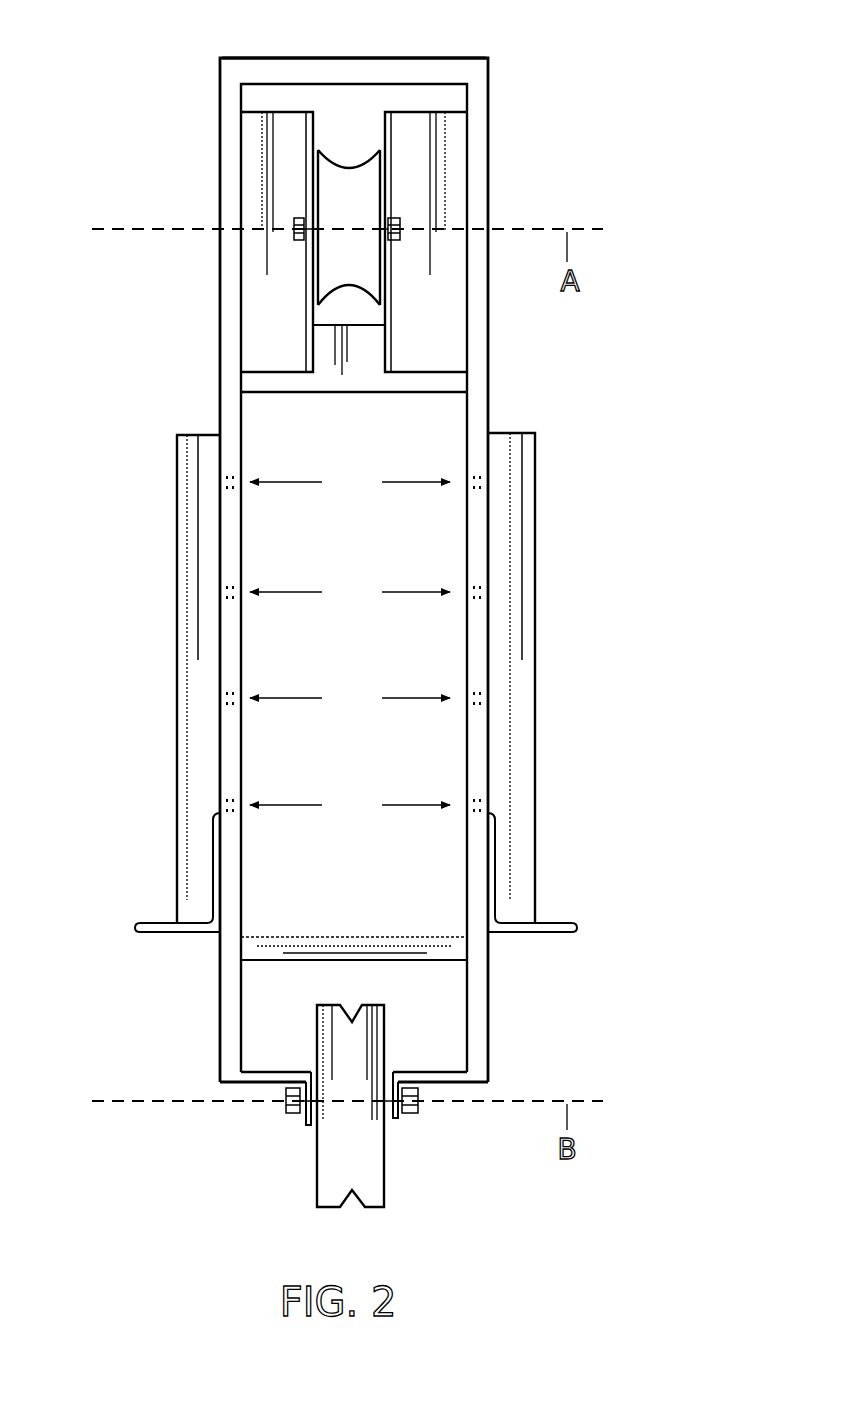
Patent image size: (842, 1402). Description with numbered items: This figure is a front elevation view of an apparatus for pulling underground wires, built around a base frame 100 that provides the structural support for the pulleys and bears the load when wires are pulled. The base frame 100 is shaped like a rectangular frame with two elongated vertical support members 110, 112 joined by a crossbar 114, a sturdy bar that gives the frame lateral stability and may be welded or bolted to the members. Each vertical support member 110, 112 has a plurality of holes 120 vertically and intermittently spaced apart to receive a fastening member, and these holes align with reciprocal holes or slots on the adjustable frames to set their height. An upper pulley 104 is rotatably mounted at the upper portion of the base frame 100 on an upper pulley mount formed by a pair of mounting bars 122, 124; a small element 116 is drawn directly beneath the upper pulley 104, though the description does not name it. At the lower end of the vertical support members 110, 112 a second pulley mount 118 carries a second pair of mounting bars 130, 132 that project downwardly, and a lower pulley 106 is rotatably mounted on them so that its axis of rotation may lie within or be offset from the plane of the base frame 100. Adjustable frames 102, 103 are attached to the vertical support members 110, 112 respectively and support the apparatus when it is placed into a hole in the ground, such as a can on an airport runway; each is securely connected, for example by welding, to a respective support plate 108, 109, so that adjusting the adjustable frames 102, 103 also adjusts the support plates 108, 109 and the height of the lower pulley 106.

The base frame 100 is at (528, 39).
The adjustable frame 102 is at (520, 550).
The adjustable frame 103 is at (198, 544).
The upper pulley 104 is at (343, 175).
The lower pulley 106 is at (330, 1197).
The support plate 108 is at (572, 927).
The support plate 109 is at (140, 927).
The vertical support member 110 is at (475, 404).
The vertical support member 112 is at (232, 303).
The crossbar 114 is at (355, 68).
The pin 116 is at (353, 383).
The second pulley mount 118 is at (250, 1078).
The holes 120 is at (353, 644).
The mounting bar 122 is at (458, 165).
The mounting bar 124 is at (250, 148).
The mounting bar 130 is at (398, 1120).
The mounting bar 132 is at (306, 1122).